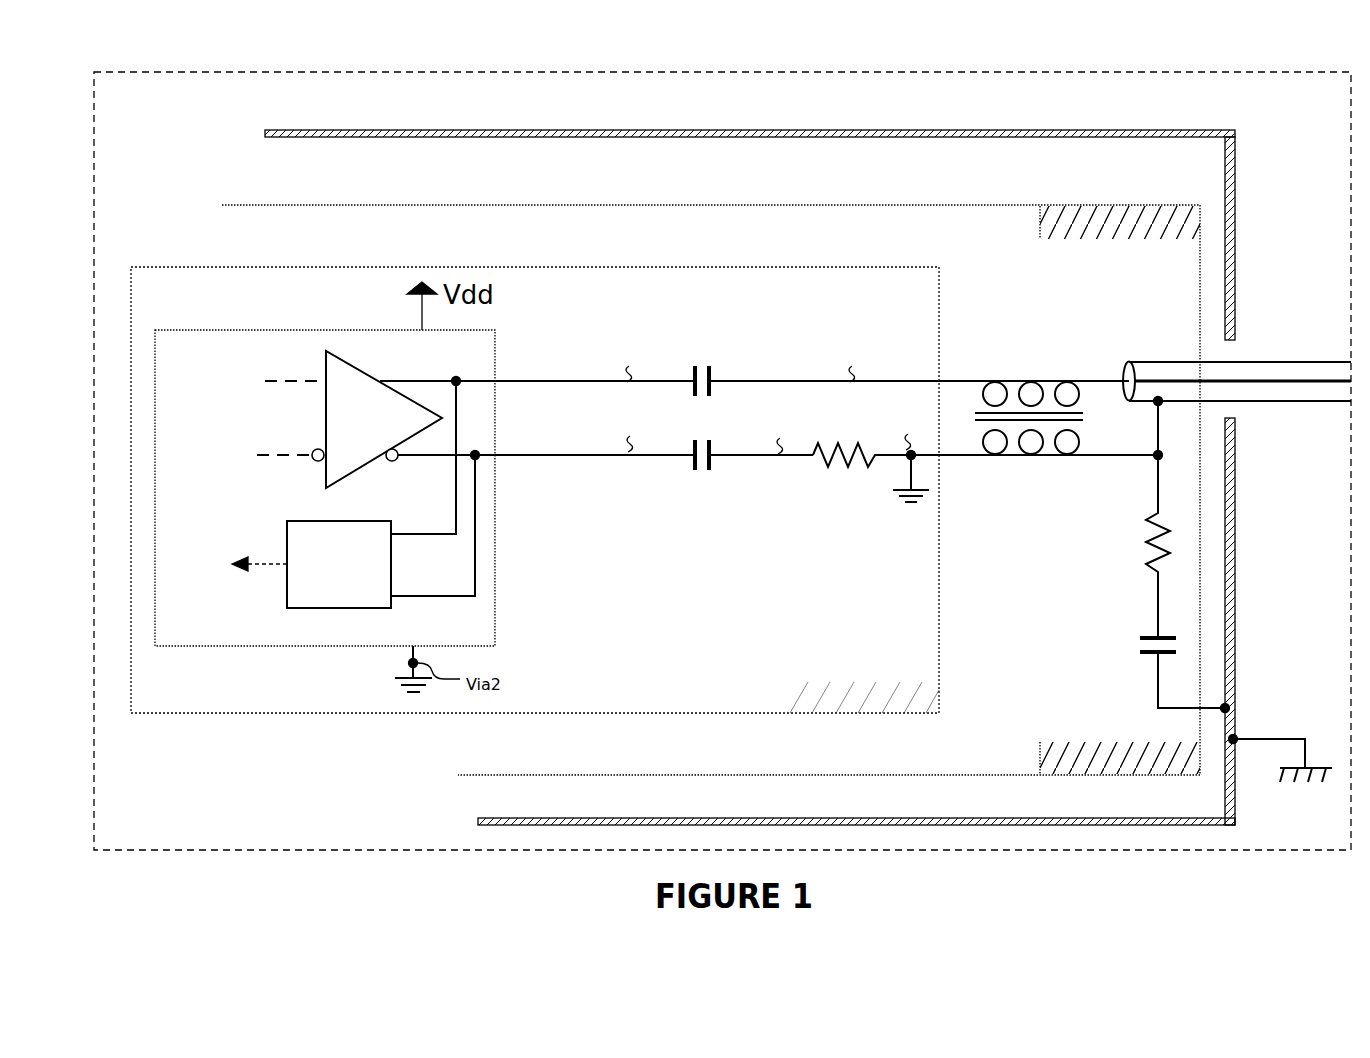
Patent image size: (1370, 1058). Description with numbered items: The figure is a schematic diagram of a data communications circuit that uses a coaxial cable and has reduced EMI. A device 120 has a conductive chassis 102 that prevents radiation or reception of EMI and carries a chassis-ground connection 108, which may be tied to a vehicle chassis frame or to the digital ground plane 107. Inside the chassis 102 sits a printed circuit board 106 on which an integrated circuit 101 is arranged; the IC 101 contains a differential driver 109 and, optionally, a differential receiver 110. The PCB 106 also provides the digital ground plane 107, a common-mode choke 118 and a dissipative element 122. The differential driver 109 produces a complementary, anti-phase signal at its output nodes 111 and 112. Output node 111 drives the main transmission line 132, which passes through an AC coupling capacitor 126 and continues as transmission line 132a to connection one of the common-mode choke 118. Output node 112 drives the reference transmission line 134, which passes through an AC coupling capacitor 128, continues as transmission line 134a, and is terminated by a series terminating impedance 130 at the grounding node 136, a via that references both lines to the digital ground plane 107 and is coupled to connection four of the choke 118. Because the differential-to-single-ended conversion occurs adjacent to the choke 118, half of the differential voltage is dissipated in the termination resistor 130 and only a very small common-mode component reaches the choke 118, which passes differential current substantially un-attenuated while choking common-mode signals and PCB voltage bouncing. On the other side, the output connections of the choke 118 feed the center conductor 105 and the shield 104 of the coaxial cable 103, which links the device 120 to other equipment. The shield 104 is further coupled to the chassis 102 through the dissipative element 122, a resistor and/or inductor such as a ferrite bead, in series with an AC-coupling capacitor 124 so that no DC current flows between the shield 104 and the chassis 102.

The device 120 is at (440, 73).
The chassis 102 is at (1235, 221).
The printed circuit board 106 is at (1082, 205).
The digital ground plane 107 is at (939, 566).
The integrated circuit 101 is at (246, 646).
The differential driver 109 is at (326, 482).
The differential receiver 110 is at (286, 596).
The output node 111 is at (413, 380).
The output node 112 is at (425, 460).
The transmission line 132 is at (540, 365).
The reference transmission line 134 is at (528, 453).
The AC coupling capacitor 126 is at (691, 391).
The AC coupling capacitor 128 is at (712, 444).
The transmission line 132a is at (770, 366).
The transmission line 134a is at (736, 458).
The series terminating impedance 130 is at (822, 444).
The grounding node 136 is at (905, 460).
The common-mode choke 118 is at (1010, 456).
The coaxial cable 103 is at (1325, 350).
The shield 104 is at (1274, 360).
The center conductor 105 is at (1248, 382).
The dissipative element 122 is at (1152, 516).
The AC-coupling capacitor 124 is at (1150, 634).
The chassis-ground connection 108 is at (1271, 733).